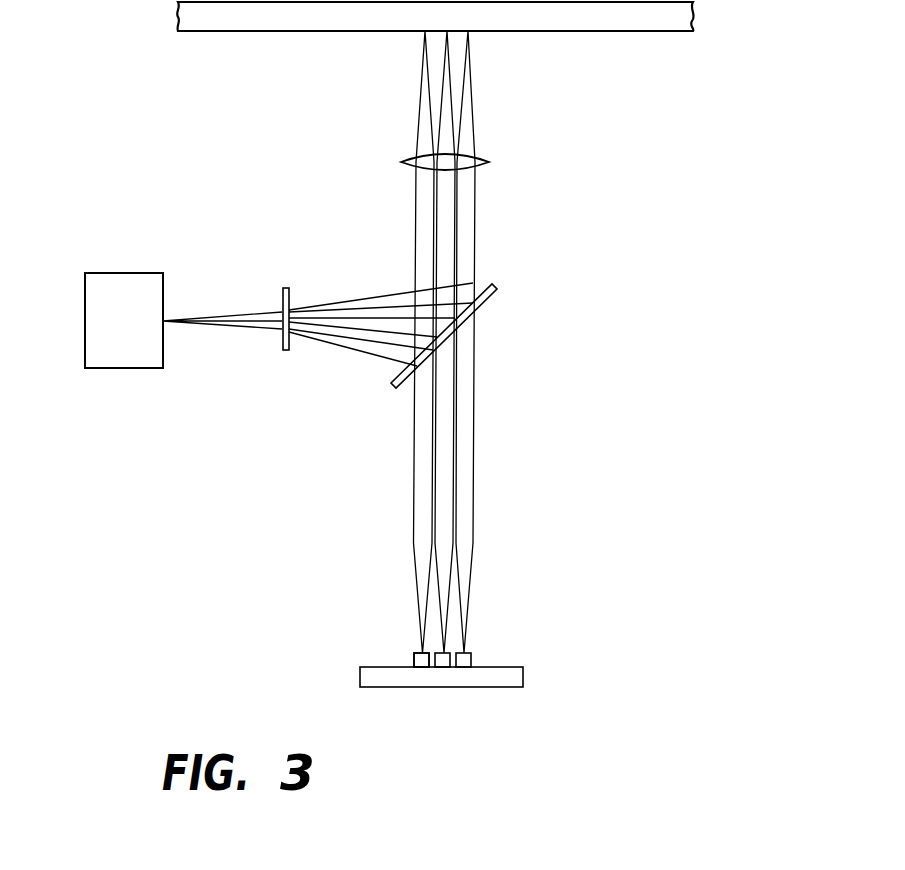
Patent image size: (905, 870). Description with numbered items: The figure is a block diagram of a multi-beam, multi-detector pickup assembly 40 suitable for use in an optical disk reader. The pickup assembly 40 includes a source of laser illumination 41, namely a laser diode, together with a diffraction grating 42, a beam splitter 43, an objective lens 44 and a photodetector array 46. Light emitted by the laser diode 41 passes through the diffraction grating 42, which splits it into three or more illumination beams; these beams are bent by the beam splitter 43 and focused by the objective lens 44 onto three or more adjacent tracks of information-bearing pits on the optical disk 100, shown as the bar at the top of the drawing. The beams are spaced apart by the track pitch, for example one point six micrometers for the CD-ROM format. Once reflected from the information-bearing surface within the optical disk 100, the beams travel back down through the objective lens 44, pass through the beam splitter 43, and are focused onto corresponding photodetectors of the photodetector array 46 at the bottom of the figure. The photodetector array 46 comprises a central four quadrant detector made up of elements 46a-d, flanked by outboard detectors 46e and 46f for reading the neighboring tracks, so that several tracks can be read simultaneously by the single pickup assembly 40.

The optical disk 100 is at (565, 31).
The pickup assembly 40 is at (607, 295).
The source of laser illumination 41 is at (102, 273).
The diffraction grating 42 is at (283, 348).
The beam splitter 43 is at (487, 297).
The objective lens 44 is at (489, 163).
The photodetector array 46 is at (455, 670).
The four quadrant detector elements 46a-d is at (440, 667).
The outboard detector 46e is at (414, 660).
The outboard detector 46f is at (458, 667).